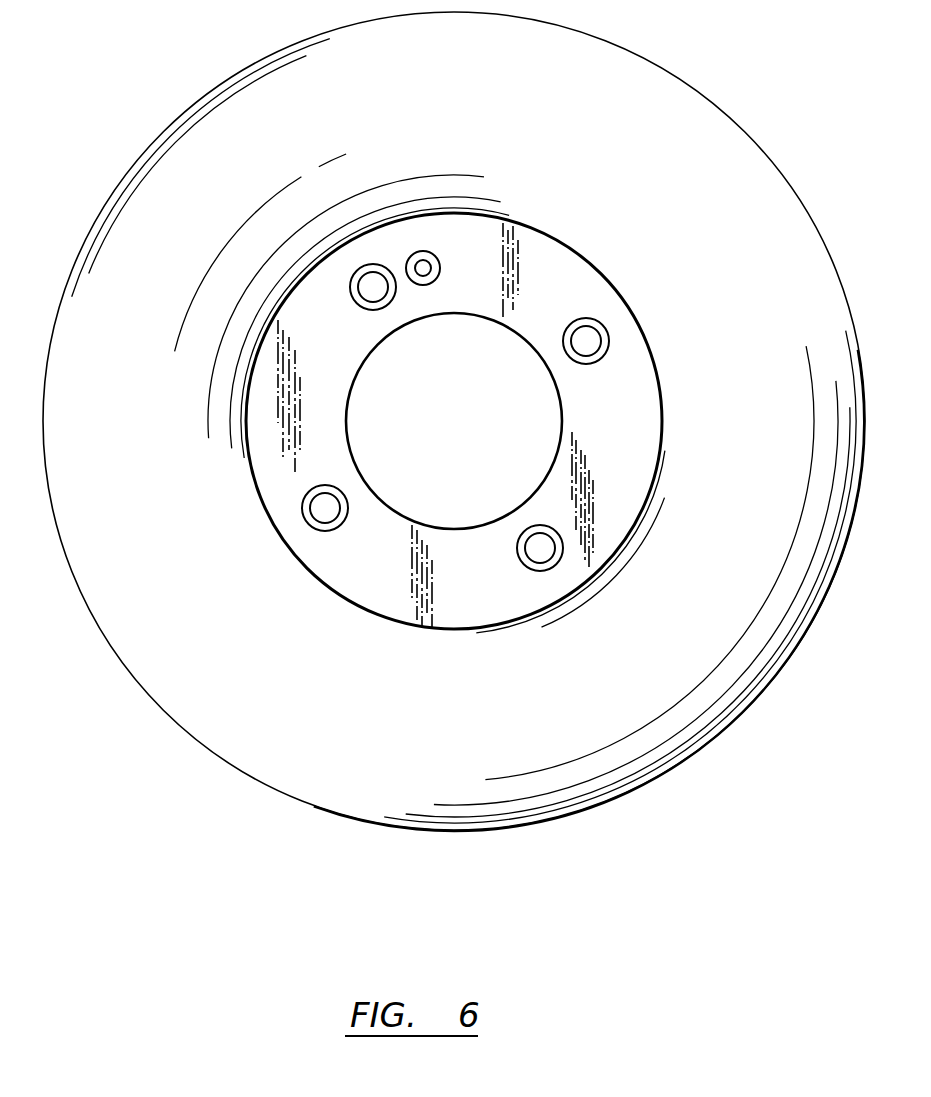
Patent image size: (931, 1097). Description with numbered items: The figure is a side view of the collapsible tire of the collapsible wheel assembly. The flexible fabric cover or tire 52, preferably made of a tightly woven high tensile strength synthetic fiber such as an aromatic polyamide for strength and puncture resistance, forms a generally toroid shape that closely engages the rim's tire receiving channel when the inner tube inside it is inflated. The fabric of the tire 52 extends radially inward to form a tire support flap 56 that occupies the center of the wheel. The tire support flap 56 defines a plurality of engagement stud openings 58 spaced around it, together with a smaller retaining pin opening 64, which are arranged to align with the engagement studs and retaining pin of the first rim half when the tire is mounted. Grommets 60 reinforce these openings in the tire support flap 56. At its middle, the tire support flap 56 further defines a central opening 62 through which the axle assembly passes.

The flexible fabric cover or tire 52 is at (742, 132).
The tire support flap 56 is at (637, 433).
The engagement stud openings 58 is at (586, 350).
The grommets 60 is at (350, 292).
The central opening 62 is at (531, 495).
The retaining pin opening 64 is at (425, 263).